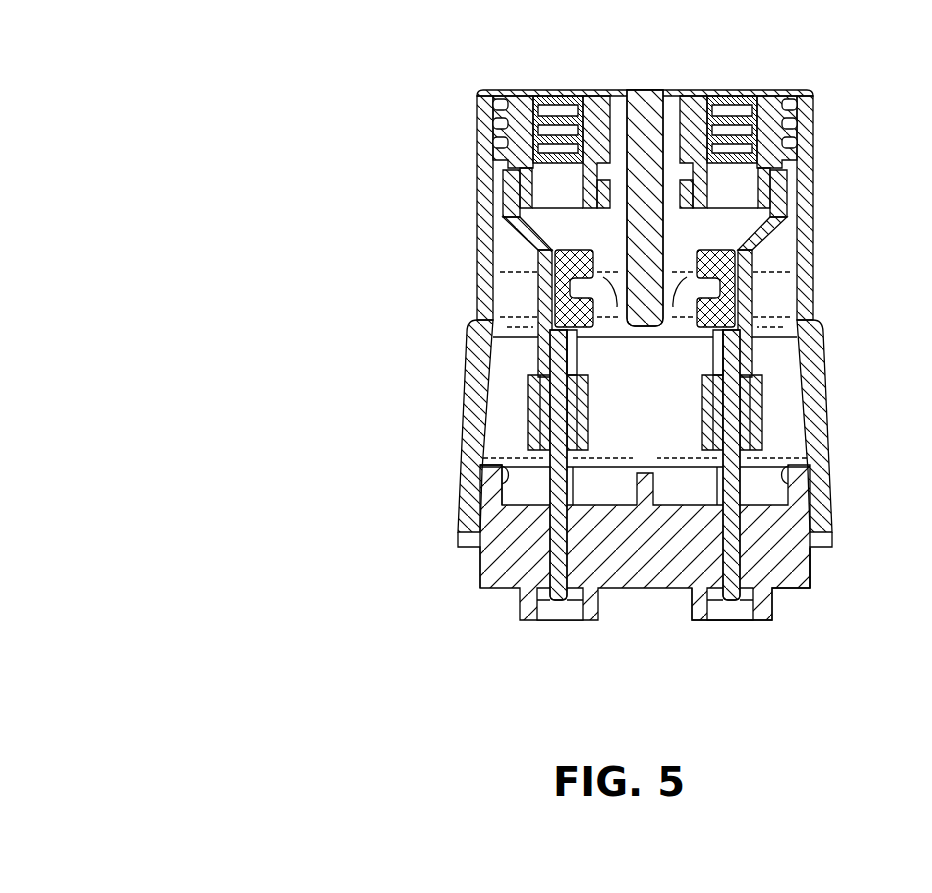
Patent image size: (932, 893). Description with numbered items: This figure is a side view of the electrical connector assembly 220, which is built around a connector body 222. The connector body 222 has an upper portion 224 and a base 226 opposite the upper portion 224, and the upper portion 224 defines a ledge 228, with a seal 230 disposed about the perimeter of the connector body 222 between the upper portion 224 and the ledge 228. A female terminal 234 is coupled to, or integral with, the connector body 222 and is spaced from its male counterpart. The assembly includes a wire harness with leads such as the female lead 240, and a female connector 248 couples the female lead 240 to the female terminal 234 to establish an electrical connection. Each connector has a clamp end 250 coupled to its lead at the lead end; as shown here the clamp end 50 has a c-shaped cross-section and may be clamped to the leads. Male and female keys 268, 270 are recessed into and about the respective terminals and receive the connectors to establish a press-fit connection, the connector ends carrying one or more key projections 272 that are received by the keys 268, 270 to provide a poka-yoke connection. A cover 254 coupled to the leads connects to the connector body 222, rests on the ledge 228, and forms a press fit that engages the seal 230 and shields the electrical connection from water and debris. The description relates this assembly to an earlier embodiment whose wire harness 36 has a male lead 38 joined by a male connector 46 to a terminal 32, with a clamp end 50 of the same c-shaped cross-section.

The electrical connector assembly 220 is at (184, 120).
The connector body 222 is at (478, 572).
The upper portion 224 is at (797, 497).
The base 226 is at (790, 566).
The ledge 228 is at (458, 547).
The seal 230 is at (485, 500).
The female terminal 234 is at (538, 270).
The female lead 240 is at (533, 113).
The female connector 248 is at (538, 249).
The clamp end 250 is at (507, 220).
The cover 254 is at (470, 357).
The male key 268 is at (498, 465).
The female key 270 is at (790, 464).
The key projections 272 is at (540, 388).
The terminal 32 is at (755, 368).
The wire harness 36 is at (733, 133).
The male lead 38 is at (800, 104).
The male connector 46 is at (757, 325).
The clamp end 50 is at (753, 268).